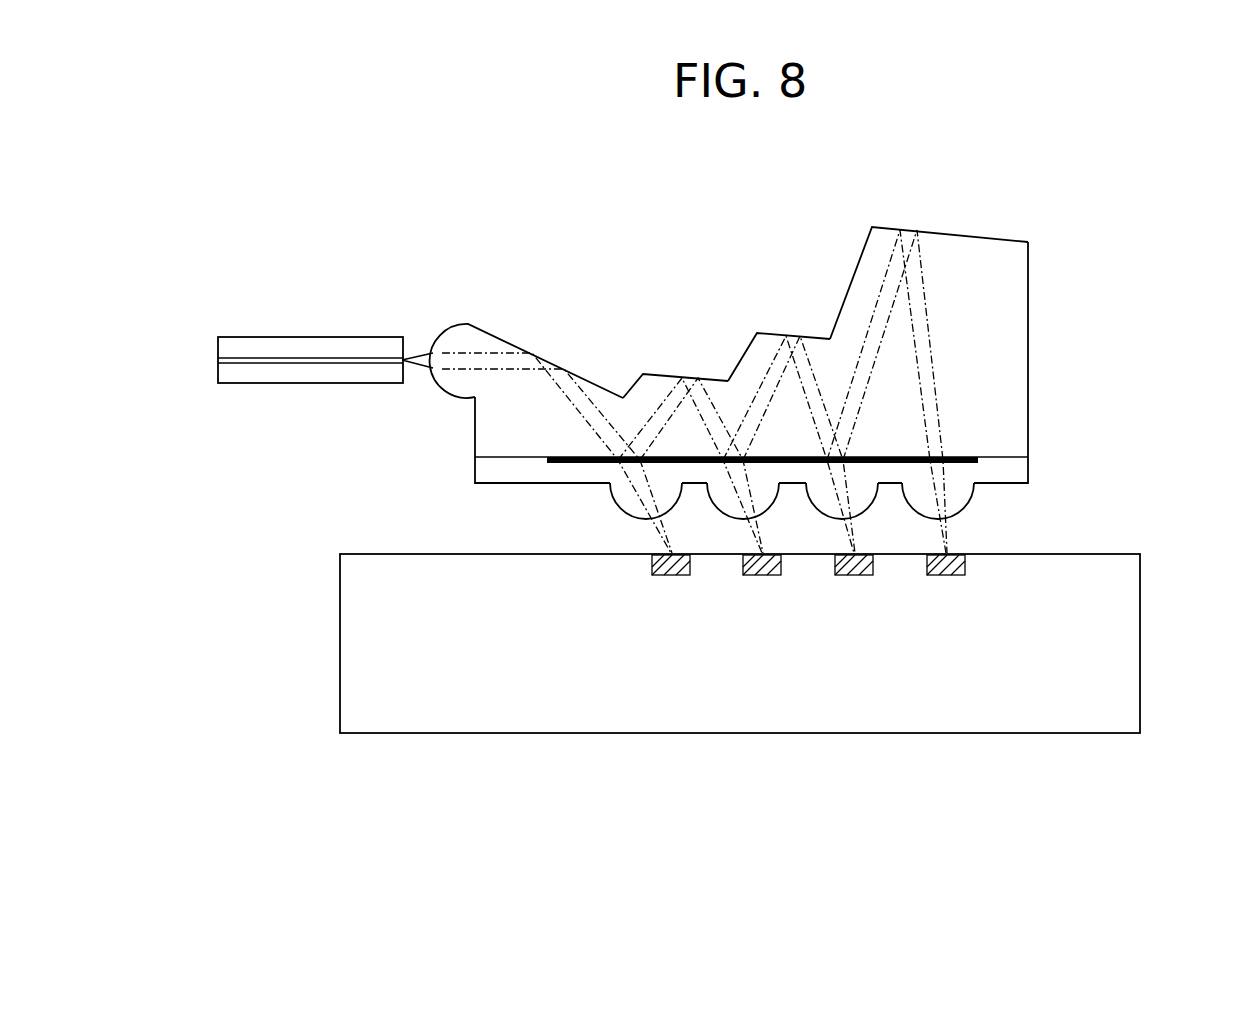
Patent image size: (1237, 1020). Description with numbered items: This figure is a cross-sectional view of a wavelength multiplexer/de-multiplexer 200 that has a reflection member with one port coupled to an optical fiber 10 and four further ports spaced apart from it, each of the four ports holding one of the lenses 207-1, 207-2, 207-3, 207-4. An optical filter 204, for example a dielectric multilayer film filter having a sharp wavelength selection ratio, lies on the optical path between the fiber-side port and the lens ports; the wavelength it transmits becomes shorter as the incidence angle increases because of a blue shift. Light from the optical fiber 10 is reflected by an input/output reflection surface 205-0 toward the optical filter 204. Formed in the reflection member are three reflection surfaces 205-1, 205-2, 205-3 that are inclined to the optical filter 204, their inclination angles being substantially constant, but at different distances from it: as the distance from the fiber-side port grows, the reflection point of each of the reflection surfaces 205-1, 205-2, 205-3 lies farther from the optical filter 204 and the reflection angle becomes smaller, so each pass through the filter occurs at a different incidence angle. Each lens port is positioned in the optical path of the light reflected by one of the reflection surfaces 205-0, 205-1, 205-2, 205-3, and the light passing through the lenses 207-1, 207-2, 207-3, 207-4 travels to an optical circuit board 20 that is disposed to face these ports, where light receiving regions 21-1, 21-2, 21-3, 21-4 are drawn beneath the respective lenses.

The optical fiber 10 is at (310, 348).
The wavelength multiplexer/de-multiplexer 200 is at (1074, 323).
The optical filter 204 is at (572, 463).
The input/output reflection surface 205-0 is at (517, 348).
The reflection surface 205-1 is at (668, 378).
The reflection surface 205-2 is at (779, 334).
The reflection surface 205-3 is at (960, 234).
The lens 207-1 is at (638, 503).
The lens 207-2 is at (742, 656).
The lens 207-3 is at (837, 656).
The lens 207-4 is at (931, 656).
The optical circuit board 20 is at (1122, 646).
The first light receiving element 21-1 is at (668, 576).
The second light receiving element 21-2 is at (773, 672).
The third light receiving element 21-3 is at (864, 672).
The fourth light receiving element 21-4 is at (957, 672).